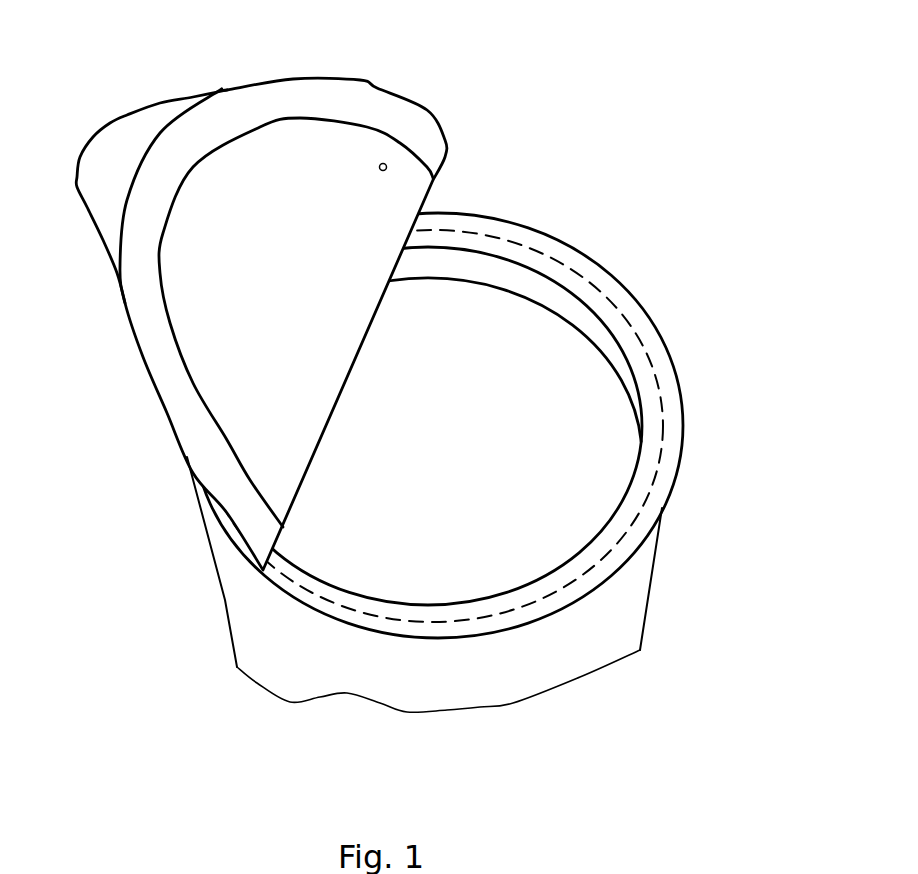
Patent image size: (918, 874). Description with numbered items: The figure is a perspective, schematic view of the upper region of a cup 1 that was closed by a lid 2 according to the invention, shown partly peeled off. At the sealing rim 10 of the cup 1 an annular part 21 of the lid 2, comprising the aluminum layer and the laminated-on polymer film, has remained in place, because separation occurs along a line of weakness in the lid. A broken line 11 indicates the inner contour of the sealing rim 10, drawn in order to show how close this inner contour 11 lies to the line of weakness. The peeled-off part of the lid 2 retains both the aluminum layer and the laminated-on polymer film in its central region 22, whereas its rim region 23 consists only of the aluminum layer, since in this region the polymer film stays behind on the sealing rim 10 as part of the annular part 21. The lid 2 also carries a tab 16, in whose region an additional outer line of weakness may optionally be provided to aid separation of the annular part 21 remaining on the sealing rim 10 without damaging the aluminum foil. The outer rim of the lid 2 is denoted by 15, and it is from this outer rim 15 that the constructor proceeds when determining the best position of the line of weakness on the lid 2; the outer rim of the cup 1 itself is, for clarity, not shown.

The cup 1 is at (631, 614).
The lid 2 is at (334, 287).
The sealing rim 10 is at (489, 402).
The inner contour of the sealing rim 11 is at (633, 325).
The outer rim of the lid 15 is at (683, 435).
The tab 16 is at (126, 171).
The annular part 21 is at (616, 298).
The central region 22 is at (388, 167).
The rim region 23 is at (375, 107).